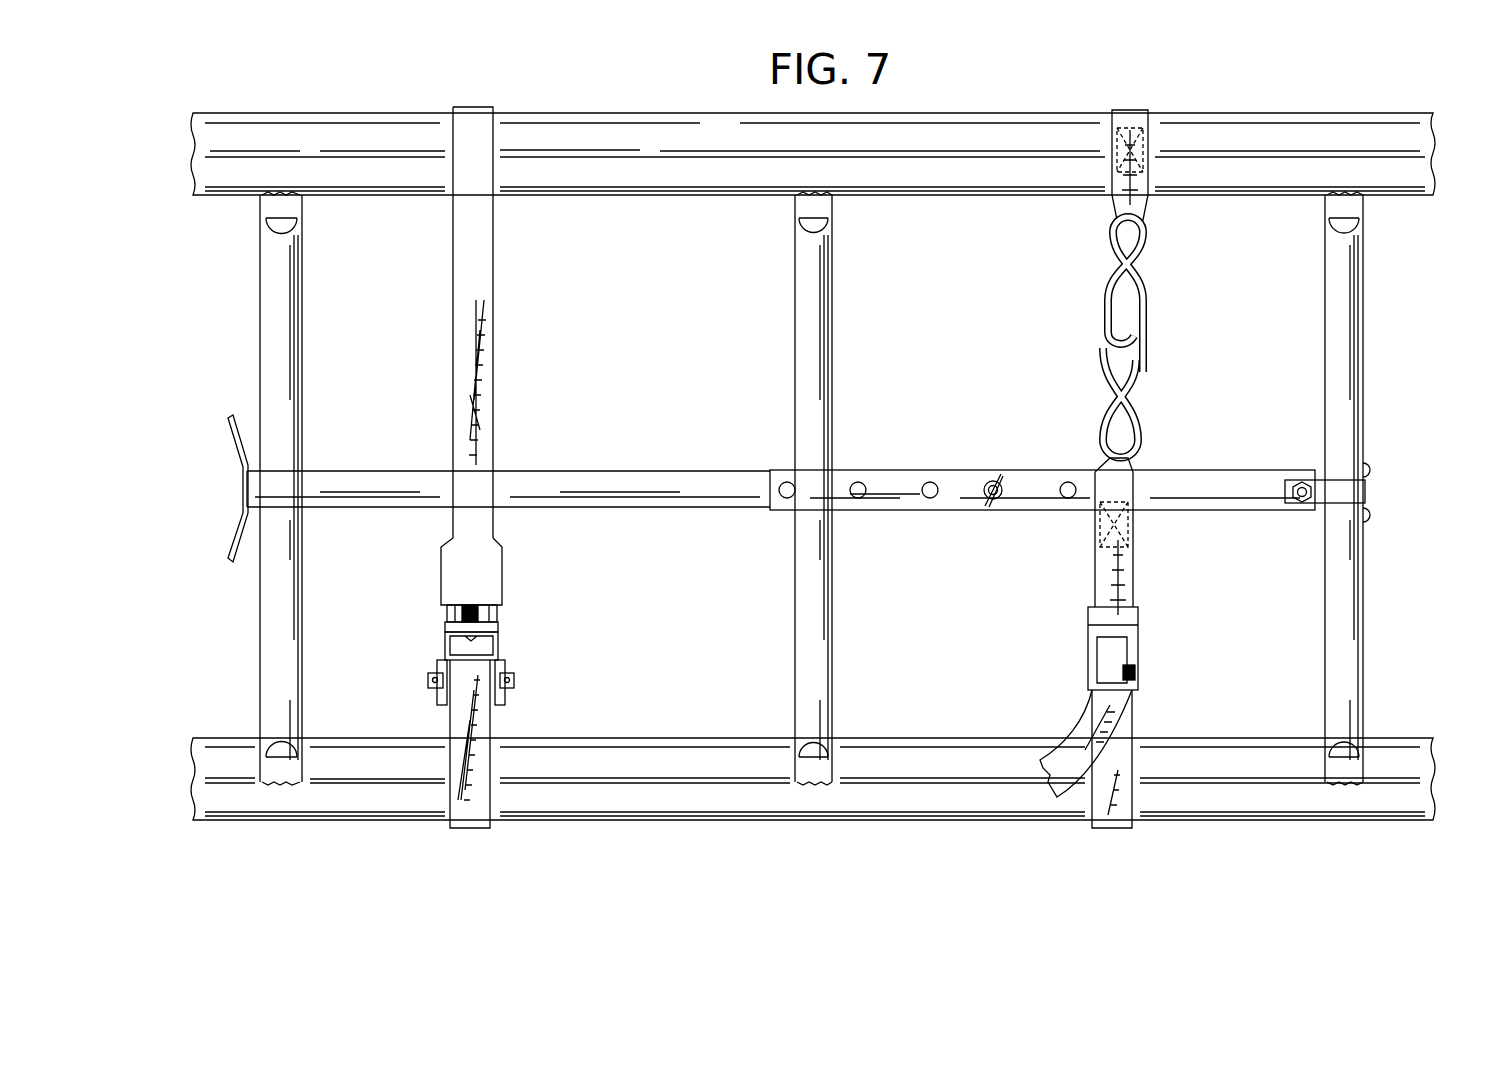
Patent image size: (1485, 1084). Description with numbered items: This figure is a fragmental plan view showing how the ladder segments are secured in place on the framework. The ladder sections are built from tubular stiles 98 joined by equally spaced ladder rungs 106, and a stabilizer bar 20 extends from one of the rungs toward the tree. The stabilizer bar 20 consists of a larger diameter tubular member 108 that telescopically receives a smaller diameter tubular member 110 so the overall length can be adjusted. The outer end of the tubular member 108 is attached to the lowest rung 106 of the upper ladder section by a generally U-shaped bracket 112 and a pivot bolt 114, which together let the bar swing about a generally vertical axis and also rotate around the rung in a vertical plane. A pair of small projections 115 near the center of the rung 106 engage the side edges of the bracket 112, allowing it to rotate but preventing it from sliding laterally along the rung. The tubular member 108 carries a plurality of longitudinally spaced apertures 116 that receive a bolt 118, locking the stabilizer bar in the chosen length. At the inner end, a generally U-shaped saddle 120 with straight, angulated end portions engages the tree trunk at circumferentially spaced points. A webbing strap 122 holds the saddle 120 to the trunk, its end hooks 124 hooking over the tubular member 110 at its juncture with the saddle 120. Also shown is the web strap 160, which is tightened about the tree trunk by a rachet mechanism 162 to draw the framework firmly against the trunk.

The stabilizer bar 20 is at (566, 468).
The tubular stiles 98 is at (996, 185).
The ladder rung 106 is at (1340, 313).
The larger diameter tubular member 108 is at (1195, 480).
The smaller diameter tubular member 110 is at (665, 485).
The U-shaped bracket 112 is at (1337, 498).
The pivot bolt 114 is at (1300, 484).
The projections 115 is at (1372, 470).
The apertures 116 is at (858, 482).
The bolt 118 is at (1005, 512).
The U-shaped saddle 120 is at (234, 540).
The webbing strap 122 is at (1125, 745).
The end hooks 124 is at (1145, 351).
The web strap 160 is at (483, 262).
The rachet mechanism 162 is at (500, 672).